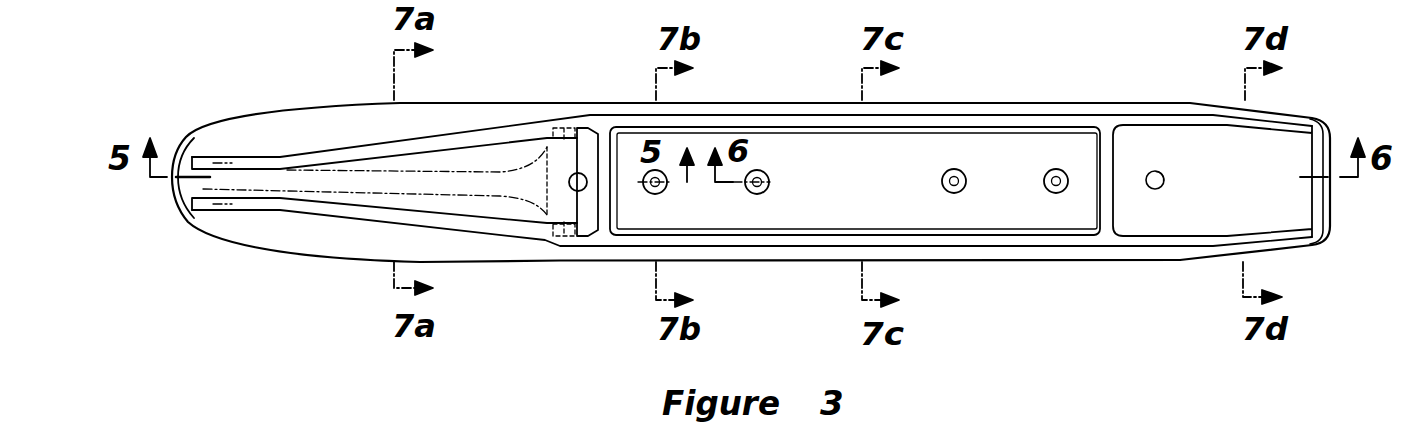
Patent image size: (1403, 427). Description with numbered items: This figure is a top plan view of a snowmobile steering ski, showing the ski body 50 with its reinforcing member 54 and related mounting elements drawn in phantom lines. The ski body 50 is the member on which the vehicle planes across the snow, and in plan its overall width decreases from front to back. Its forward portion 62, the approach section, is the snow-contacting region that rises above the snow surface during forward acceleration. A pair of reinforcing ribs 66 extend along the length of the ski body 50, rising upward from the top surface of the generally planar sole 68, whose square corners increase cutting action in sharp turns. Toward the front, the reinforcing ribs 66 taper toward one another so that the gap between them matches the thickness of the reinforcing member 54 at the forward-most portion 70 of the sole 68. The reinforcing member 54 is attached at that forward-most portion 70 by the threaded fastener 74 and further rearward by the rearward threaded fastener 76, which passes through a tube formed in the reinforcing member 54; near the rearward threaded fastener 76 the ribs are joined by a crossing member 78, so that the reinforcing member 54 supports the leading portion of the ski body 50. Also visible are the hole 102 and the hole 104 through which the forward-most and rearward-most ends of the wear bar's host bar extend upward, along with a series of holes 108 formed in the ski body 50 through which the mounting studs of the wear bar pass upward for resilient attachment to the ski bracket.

The ski body 50 is at (1088, 103).
The reinforcing member 54 is at (355, 197).
The forward portion 62 is at (297, 243).
The reinforcing ribs 66 is at (977, 122).
The sole 68 is at (1042, 252).
The forward-most portion 70 is at (190, 222).
The threaded fastener 74 is at (226, 211).
The rearward threaded fastener 76 is at (557, 245).
The crossing member 78 is at (604, 147).
The hole 102 is at (582, 226).
The hole 104 is at (1163, 187).
The holes 108 is at (655, 194).